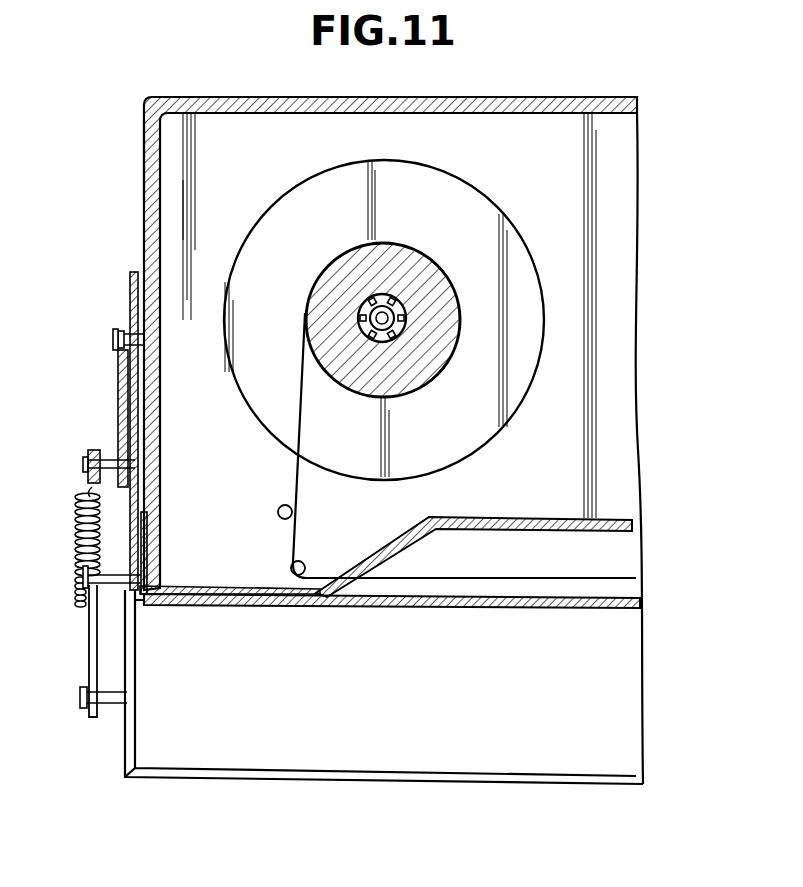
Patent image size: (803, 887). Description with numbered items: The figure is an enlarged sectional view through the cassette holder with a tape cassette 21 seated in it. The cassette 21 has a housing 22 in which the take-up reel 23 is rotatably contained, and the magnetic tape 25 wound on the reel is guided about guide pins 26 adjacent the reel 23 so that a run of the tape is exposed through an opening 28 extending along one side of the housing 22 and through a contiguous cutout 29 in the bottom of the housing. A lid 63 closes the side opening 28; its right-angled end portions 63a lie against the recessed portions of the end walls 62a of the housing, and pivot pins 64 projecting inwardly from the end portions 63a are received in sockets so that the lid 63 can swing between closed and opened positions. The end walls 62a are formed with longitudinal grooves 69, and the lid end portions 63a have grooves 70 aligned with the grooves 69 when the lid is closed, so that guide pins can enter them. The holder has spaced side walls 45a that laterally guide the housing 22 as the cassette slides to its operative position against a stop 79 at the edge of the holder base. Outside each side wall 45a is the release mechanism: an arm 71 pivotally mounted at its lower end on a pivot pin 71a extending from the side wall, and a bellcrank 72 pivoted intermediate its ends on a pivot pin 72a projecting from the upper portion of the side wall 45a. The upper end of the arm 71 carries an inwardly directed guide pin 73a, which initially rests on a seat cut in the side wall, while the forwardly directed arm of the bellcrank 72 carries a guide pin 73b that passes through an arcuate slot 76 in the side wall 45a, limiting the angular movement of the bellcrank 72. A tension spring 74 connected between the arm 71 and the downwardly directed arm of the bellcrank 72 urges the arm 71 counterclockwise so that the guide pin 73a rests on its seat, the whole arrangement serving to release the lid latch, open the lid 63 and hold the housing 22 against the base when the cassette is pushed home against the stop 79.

The tape cassette 21 is at (647, 242).
The cassette housing 22 is at (553, 100).
The take-up reel 23 is at (483, 193).
The magnetic tape 25 is at (293, 488).
The guide pins 26 is at (291, 566).
The opening 28 is at (225, 596).
The cutout 29 is at (478, 530).
The side walls 45a is at (130, 401).
The end walls 62a is at (143, 198).
The lid 63 is at (272, 606).
The right-angled end portions 63a is at (140, 606).
The pivot pins 64 is at (150, 548).
The longitudinal grooves 69 is at (137, 218).
The grooves 70 is at (150, 600).
The arm 71 is at (89, 650).
The pivot pin 71a is at (81, 697).
The bellcrank 72 is at (118, 370).
The pivot pin 72a is at (94, 451).
The guide pin 73a is at (84, 577).
The guide pin 73b is at (114, 335).
The tension spring 74 is at (84, 505).
The arcuate slot 76 is at (128, 333).
The stop 79 is at (286, 779).